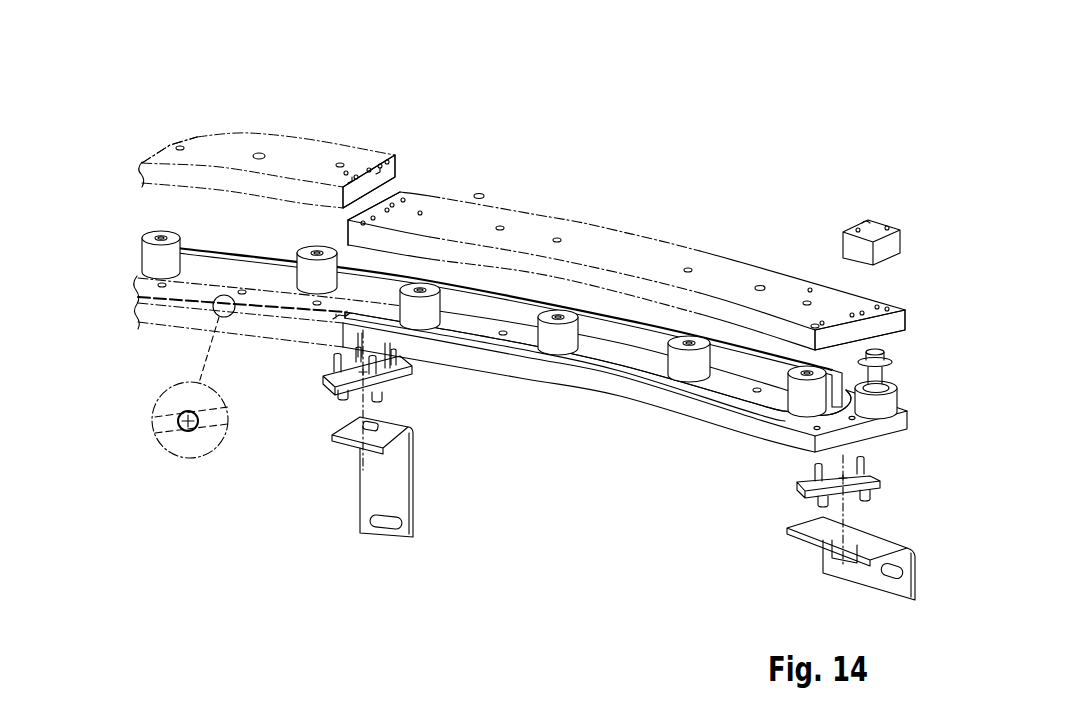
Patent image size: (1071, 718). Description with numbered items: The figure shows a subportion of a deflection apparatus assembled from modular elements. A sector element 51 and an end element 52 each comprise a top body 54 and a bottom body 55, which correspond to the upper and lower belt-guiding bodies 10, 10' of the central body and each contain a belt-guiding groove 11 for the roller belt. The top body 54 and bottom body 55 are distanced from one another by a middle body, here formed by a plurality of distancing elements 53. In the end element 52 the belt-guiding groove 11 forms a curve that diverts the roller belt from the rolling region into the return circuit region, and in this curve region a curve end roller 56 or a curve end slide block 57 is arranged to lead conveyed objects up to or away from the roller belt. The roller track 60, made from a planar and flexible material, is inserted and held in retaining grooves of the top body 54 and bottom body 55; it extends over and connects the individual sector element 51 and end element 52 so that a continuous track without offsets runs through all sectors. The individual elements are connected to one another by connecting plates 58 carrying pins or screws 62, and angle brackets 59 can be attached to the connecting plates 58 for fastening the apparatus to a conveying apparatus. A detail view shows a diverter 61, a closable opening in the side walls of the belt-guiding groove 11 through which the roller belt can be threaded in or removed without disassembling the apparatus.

The upper belt-guiding body 10 is at (522, 216).
The top body 54 is at (523, 243).
The lower belt-guiding body 10' is at (494, 371).
The bottom body 55 is at (598, 363).
The belt-guiding groove 11 is at (627, 372).
The sector element 51 is at (293, 75).
The end element 52 is at (693, 169).
The distancing element 53 is at (168, 238).
The curve end roller 56 is at (898, 393).
The curve end slide block 57 is at (873, 222).
The connecting plate 58 is at (330, 386).
The angle bracket 59 is at (363, 487).
The roller track 60 is at (246, 263).
The diverter 61 is at (190, 432).
The pins or screws 62 is at (404, 374).